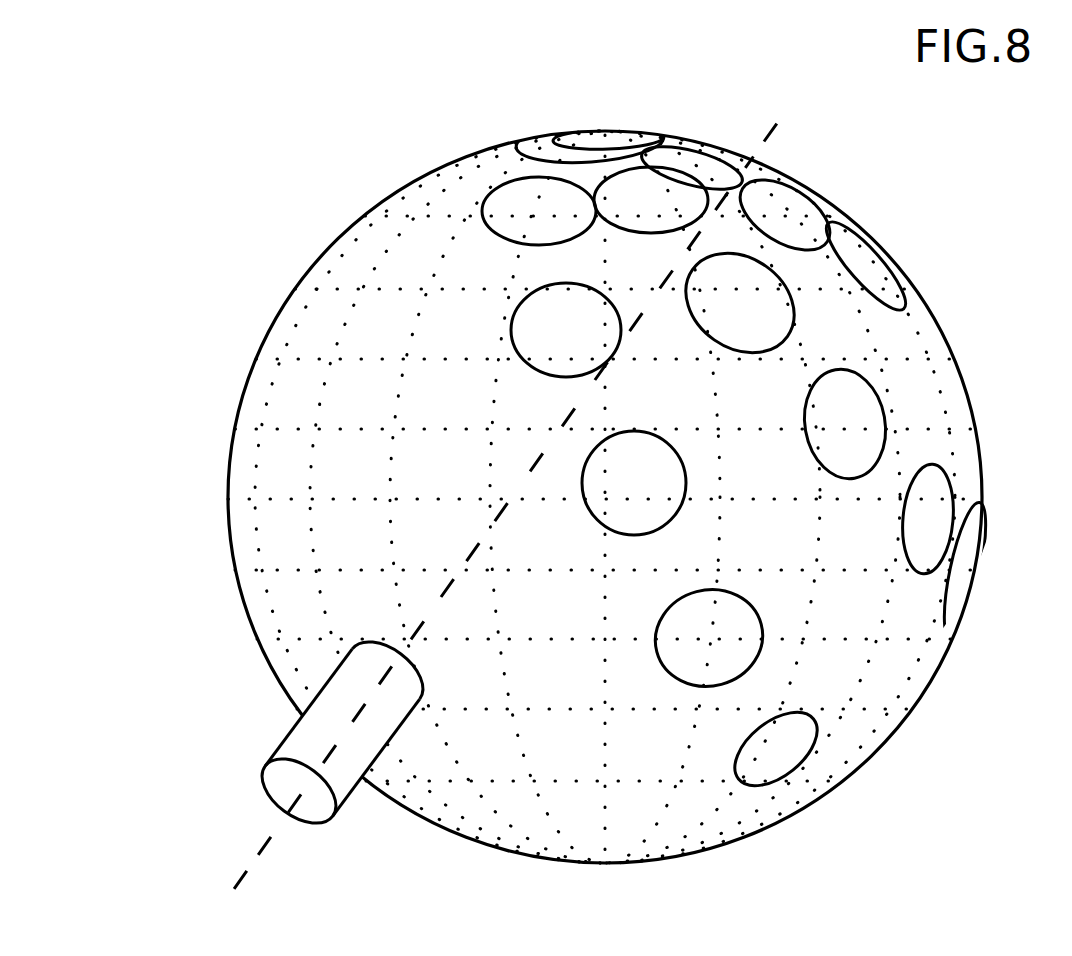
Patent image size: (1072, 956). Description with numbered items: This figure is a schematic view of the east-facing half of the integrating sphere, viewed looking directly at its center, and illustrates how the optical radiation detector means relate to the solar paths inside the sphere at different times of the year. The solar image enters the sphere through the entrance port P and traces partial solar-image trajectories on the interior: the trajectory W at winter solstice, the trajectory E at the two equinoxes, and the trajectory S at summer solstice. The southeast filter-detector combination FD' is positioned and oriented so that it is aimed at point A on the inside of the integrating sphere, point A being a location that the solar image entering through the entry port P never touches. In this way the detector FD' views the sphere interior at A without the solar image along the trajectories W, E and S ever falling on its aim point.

The entry port P is at (590, 130).
The aim point A is at (510, 506).
The winter solstice solar-image trajectory W is at (784, 221).
The equinox solar-image trajectory E is at (740, 308).
The summer solstice solar-image trajectory S is at (633, 498).
The southeast filter-detector combination FD' is at (292, 732).